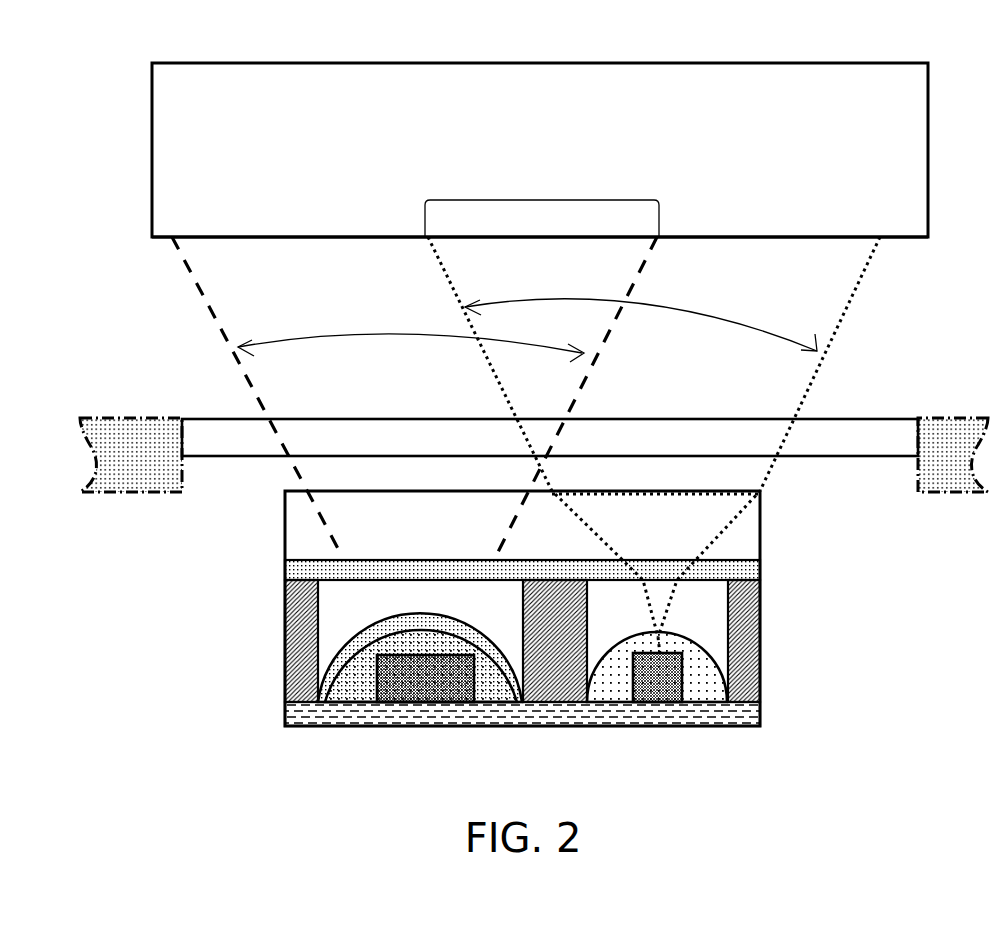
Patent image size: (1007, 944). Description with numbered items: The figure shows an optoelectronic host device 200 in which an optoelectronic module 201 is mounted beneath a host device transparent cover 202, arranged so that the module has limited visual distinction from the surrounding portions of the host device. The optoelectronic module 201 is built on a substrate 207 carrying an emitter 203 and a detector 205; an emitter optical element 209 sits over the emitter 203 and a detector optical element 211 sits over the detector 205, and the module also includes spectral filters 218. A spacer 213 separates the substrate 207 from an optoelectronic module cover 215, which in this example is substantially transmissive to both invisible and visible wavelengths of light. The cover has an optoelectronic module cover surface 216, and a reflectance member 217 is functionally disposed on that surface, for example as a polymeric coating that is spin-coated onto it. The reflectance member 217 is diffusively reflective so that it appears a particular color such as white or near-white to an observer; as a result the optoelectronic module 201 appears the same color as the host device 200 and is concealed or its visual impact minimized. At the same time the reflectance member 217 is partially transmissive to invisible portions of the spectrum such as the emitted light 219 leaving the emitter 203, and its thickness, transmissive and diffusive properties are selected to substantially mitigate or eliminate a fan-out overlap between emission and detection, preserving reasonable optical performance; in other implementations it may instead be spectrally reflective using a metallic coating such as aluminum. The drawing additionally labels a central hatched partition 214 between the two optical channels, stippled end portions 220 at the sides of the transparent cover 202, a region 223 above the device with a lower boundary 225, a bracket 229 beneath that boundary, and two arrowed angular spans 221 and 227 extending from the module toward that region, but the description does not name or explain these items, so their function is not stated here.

The host device 200 is at (82, 382).
The optoelectronic module 201 is at (183, 765).
The host device transparent cover 202 is at (240, 443).
The emitter 203 is at (665, 690).
The detector 205 is at (398, 686).
The substrate 207 is at (290, 717).
The emitter optical element 209 is at (695, 657).
The detector optical element 211 is at (337, 690).
The spacer 213 is at (747, 615).
The partition wall 214 is at (540, 680).
The optoelectronic module cover 215 is at (302, 515).
The optoelectronic module cover surface 216 is at (442, 551).
The reflectance member 217 is at (748, 572).
The spectral filters 218 is at (365, 624).
The emitted light 219 is at (814, 374).
The mounting frame 220 is at (113, 476).
The beam angle of second light 221 is at (718, 310).
The target object 223 is at (237, 121).
The illuminated surface 225 is at (299, 226).
The beam angle of first light 227 is at (300, 336).
The overlap region 229 is at (470, 199).